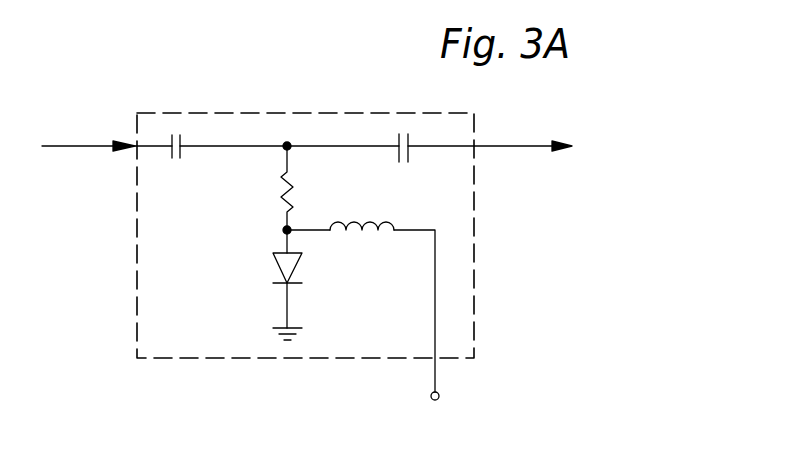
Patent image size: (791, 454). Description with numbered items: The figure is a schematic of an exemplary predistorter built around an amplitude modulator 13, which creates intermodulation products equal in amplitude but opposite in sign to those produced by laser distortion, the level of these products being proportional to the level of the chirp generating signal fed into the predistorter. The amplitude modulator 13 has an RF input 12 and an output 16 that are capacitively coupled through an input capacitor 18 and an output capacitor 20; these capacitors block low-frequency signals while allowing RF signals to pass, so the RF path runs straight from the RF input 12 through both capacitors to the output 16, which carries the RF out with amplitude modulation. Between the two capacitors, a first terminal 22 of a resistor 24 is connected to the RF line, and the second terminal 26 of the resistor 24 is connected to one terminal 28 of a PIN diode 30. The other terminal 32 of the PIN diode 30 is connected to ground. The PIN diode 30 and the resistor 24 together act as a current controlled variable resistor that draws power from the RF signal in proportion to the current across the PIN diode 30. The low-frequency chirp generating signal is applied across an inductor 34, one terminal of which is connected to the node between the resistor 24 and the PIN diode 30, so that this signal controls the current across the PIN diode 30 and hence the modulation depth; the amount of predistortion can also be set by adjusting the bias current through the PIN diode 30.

The RF input 12 is at (80, 140).
The amplitude modulator 13 is at (305, 113).
The output 16 is at (500, 118).
The input capacitor 18 is at (182, 152).
The output capacitor 20 is at (409, 160).
The first terminal of resistor 22 is at (290, 156).
The resistor 24 is at (283, 190).
The second terminal of resistor 26 is at (288, 223).
The terminal of PIN diode 28 is at (285, 240).
The PIN diode 30 is at (298, 262).
The other terminal of PIN diode 32 is at (290, 308).
The inductor 34 is at (357, 222).